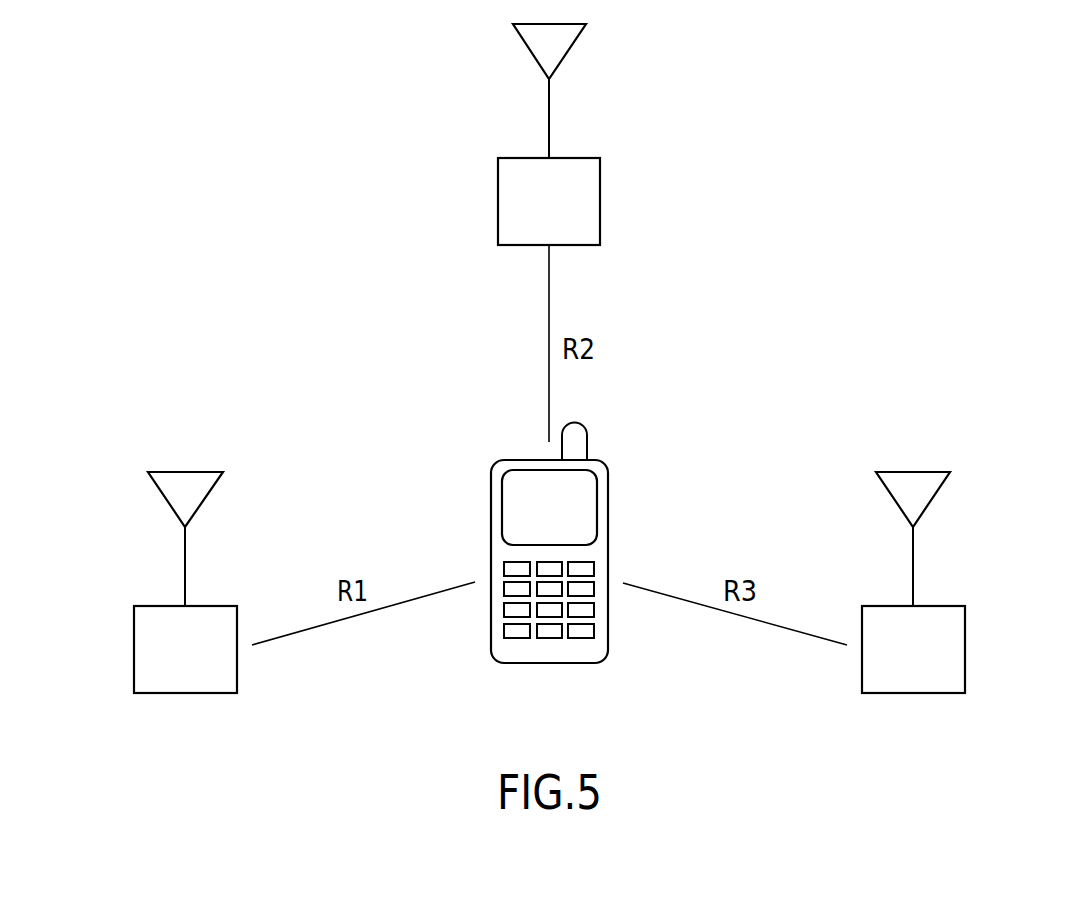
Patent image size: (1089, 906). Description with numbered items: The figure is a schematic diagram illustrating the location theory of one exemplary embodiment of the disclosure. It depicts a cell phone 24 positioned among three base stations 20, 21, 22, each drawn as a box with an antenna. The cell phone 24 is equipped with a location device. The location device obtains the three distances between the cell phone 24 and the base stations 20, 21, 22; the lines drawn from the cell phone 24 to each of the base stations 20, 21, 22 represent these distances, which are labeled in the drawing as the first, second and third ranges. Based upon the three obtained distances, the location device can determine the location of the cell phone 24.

The base station 20 is at (134, 645).
The base station 21 is at (498, 198).
The base station 22 is at (965, 648).
The cell phone 24 is at (608, 501).